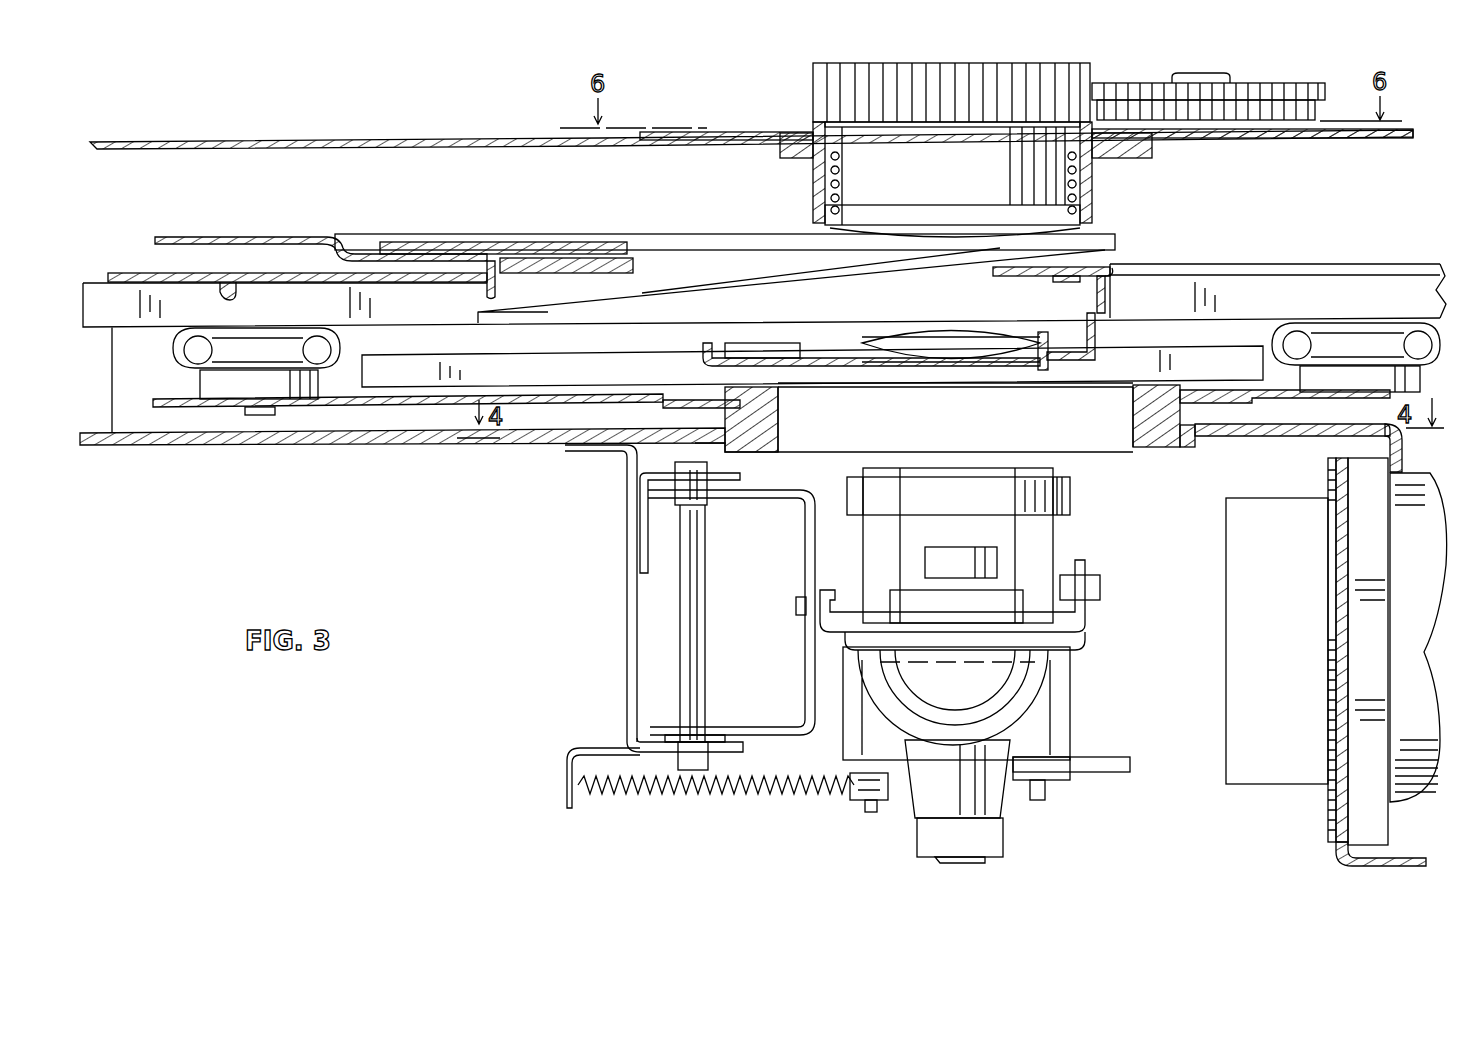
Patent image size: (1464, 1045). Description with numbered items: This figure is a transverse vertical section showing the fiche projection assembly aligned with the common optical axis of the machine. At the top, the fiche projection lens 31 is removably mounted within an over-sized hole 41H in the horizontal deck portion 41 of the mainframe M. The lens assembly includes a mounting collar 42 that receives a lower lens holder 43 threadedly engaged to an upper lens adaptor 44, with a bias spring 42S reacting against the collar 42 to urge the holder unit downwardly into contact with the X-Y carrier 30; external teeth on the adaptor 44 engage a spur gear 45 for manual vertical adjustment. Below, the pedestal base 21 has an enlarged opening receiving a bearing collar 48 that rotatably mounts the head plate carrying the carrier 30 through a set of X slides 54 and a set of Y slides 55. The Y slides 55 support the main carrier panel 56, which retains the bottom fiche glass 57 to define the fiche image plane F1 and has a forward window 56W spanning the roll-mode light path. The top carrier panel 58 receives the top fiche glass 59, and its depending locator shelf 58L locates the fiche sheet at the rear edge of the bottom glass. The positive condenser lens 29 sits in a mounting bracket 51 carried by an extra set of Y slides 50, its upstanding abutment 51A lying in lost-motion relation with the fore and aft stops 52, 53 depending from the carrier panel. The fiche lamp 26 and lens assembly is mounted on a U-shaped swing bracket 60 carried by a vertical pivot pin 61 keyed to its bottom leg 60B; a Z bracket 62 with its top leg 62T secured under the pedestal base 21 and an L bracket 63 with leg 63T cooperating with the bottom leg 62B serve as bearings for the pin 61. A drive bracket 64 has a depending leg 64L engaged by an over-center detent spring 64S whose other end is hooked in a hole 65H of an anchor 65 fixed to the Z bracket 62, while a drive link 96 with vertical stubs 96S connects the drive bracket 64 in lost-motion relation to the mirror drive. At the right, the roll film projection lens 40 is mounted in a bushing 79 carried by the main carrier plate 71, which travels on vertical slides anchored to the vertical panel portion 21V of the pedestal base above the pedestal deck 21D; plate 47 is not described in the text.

The mainframe M is at (304, 136).
The upper lens adaptor 44 is at (950, 63).
The fiche projection lens 31 is at (1108, 62).
The spur gear 45 is at (1155, 83).
The plate 47 is at (745, 131).
The mounting collar 42 is at (812, 178).
The bias spring 42S is at (1078, 186).
The lower lens holder 43 is at (972, 223).
The over-sized hole 41H is at (1163, 154).
The horizontal deck portion 41 is at (1258, 142).
The X-Y carrier 30 is at (1126, 240).
The top fiche glass 59 is at (378, 246).
The top carrier panel 58 is at (262, 238).
The locator shelf 58L is at (487, 290).
The fiche image plane F1 is at (565, 240).
The aft stop 53 is at (240, 300).
The bottom fiche glass 57 is at (535, 268).
The main carrier panel 56 is at (1115, 265).
The window 56W is at (1224, 257).
The Y slides 55 is at (1290, 303).
The fore stop 52 is at (1108, 300).
The upstanding abutment 51A is at (1085, 312).
The mounting bracket 51 is at (800, 343).
The positive condenser lens 29 is at (970, 359).
The Y slides 50 is at (535, 375).
The X slides 54 is at (160, 353).
The bearing collar 48 is at (1152, 442).
The pedestal base 21 is at (1265, 437).
The vertical panel portion 21V is at (1400, 452).
The Z bracket 62 is at (677, 603).
The top leg 62T is at (620, 452).
The bottom leg 62B is at (745, 748).
The L bracket 63 is at (689, 513).
The leg 63T is at (740, 476).
The vertical pivot pin 61 is at (695, 568).
The U-shaped swing bracket 60 is at (806, 530).
The bottom leg 60B is at (790, 722).
The anchor 65 is at (598, 748).
The hole 65H is at (566, 780).
The detent spring 64S is at (620, 798).
The depending leg 64L is at (880, 812).
The drive bracket 64 is at (1010, 800).
The lamp 26 is at (966, 715).
The drive link 96 is at (1108, 758).
The vertical stubs 96S is at (1046, 790).
The roll film projection lens 40 is at (1295, 681).
The bushing 79 is at (1328, 478).
The main carrier plate 71 is at (1336, 814).
The pedestal deck 21D is at (1415, 872).